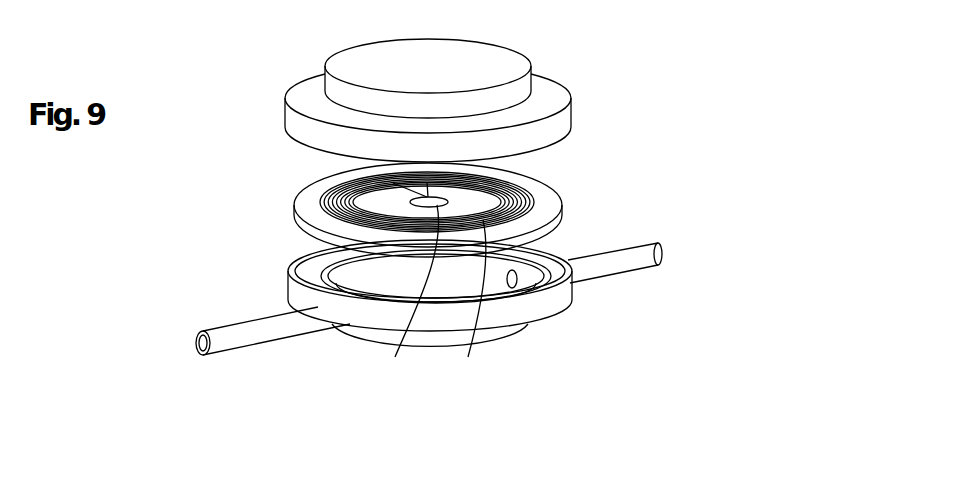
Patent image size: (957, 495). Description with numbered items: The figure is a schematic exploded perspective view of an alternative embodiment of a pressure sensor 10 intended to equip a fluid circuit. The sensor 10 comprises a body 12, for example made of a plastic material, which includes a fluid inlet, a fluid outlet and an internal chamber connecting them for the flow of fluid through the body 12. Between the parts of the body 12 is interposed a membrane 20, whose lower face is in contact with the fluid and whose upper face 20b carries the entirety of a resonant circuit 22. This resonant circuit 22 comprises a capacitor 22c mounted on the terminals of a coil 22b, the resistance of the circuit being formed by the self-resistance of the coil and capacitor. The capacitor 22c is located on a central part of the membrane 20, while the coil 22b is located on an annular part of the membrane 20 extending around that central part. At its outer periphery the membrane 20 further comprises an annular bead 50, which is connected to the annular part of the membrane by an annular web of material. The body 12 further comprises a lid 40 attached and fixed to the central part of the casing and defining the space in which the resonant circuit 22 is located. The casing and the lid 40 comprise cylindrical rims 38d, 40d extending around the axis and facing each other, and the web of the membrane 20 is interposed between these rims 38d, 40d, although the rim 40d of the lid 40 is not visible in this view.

The pressure sensor 10 is at (415, 338).
The body 12 is at (298, 342).
The membrane 20 is at (401, 243).
The face 20b is at (480, 200).
The resonant circuit 22 is at (477, 243).
The coil 22b is at (471, 307).
The capacitor 22c is at (408, 300).
The cylindrical rim 38d is at (533, 279).
The lid 40 is at (408, 94).
The cylindrical rim 40d is at (320, 148).
The annular bead 50 is at (550, 213).